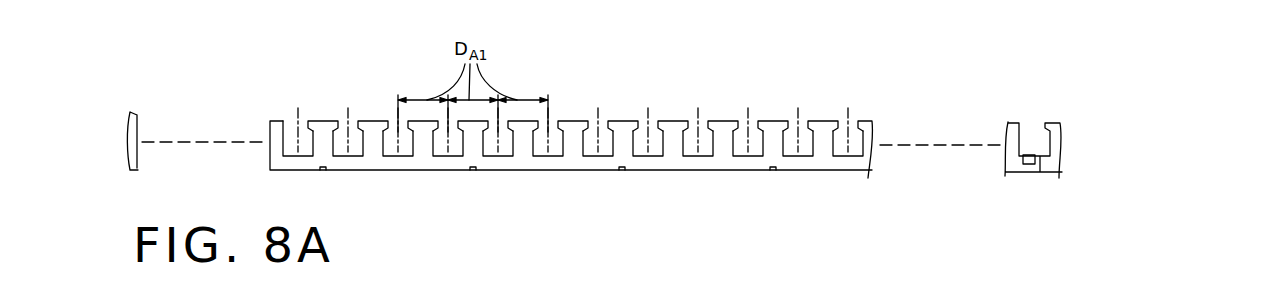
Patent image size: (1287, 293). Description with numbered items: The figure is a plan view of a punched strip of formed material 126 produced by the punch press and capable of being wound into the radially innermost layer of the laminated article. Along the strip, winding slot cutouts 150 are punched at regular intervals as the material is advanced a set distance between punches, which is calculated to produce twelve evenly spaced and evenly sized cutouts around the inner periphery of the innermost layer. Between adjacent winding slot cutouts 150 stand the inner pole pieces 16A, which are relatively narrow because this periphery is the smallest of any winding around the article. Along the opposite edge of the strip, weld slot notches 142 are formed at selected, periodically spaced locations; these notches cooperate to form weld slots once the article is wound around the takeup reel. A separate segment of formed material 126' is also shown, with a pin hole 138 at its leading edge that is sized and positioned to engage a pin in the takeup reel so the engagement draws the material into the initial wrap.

The formed material 126 is at (571, 108).
The formed material 126' is at (1056, 119).
The inner pole pieces 16A is at (673, 123).
The winding slot cutouts 150 is at (390, 118).
The weld slot notches 142 is at (323, 170).
The pin hole 138 is at (1029, 164).